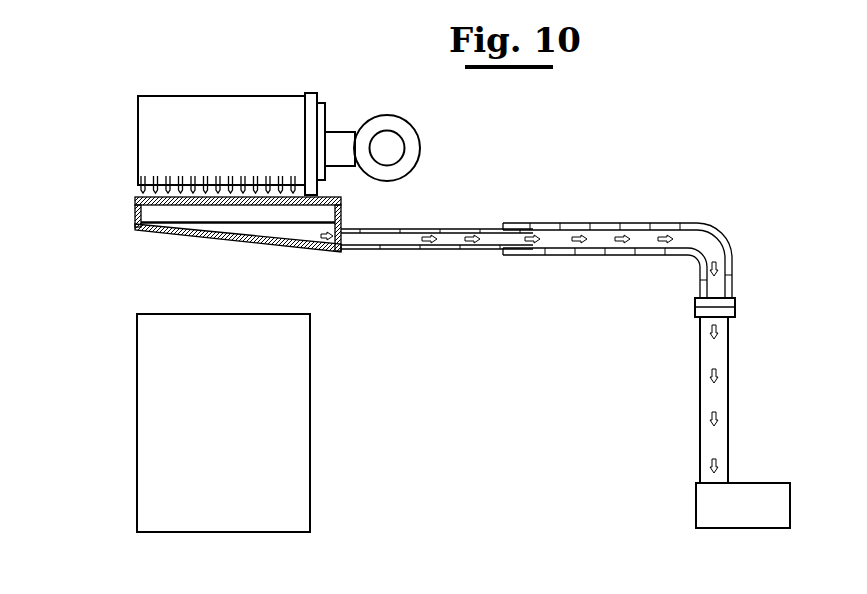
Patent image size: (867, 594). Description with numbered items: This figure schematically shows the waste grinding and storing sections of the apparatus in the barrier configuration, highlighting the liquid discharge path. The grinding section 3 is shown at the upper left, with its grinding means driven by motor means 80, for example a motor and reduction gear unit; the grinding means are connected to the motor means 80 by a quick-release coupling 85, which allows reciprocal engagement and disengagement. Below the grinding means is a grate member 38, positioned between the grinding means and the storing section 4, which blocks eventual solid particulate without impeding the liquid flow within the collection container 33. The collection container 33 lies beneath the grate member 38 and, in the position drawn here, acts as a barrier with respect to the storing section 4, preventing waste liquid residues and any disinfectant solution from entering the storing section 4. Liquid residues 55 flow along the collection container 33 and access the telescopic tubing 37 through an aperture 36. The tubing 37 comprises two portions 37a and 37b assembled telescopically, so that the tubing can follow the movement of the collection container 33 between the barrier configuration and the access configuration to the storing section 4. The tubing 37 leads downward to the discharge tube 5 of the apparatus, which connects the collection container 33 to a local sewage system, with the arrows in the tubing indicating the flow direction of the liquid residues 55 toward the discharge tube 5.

The grinding section 3 is at (117, 95).
The quick-release coupling 85 is at (322, 105).
The motor means 80 is at (397, 140).
The grate member 38 is at (138, 199).
The collection container 33 is at (172, 232).
The liquid residues 55 is at (293, 228).
The aperture 36 is at (340, 248).
The telescopic tubing 37 is at (538, 325).
The tubing portion 37a is at (453, 248).
The tubing portion 37b is at (623, 250).
The storing section 4 is at (112, 392).
The discharge tube 5 is at (675, 520).